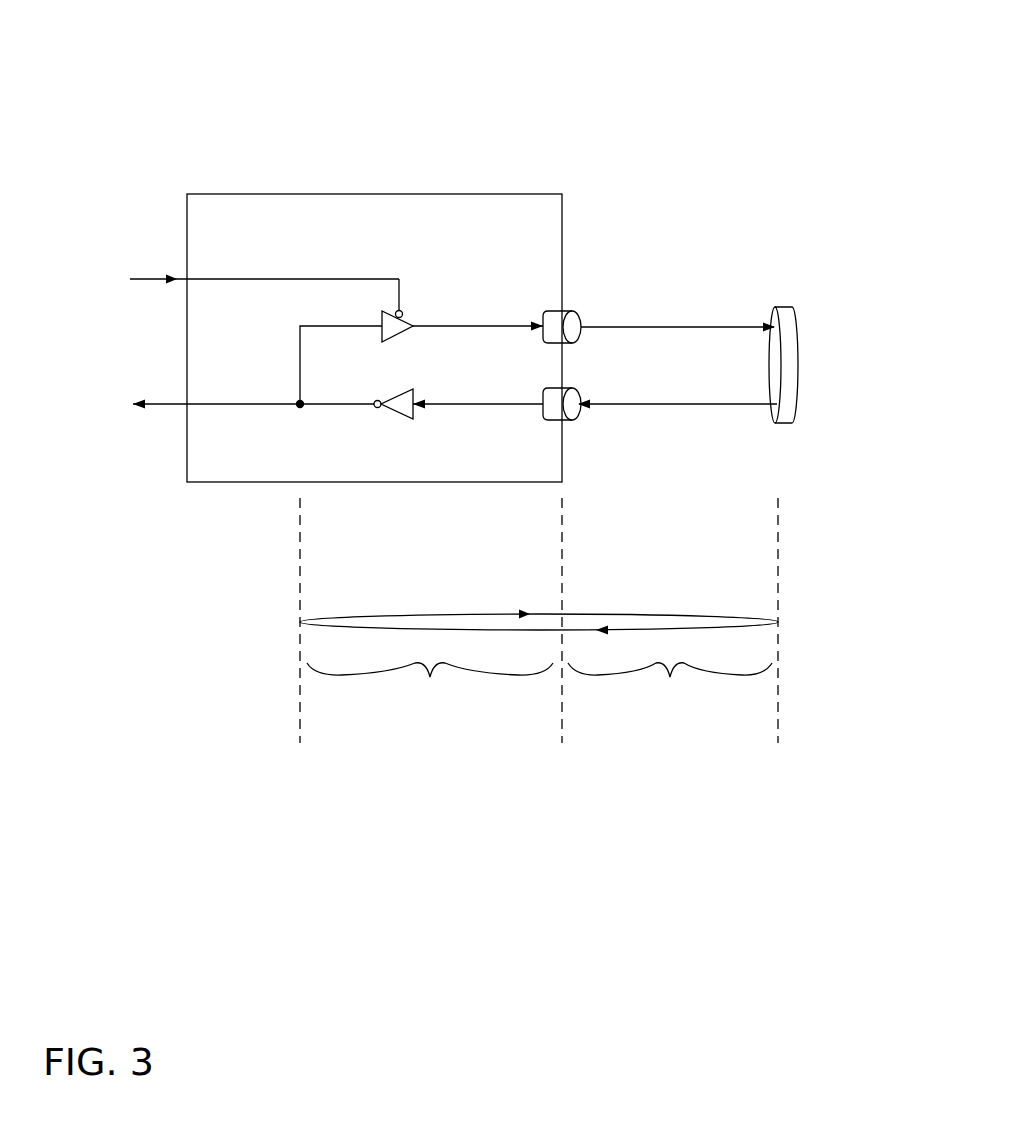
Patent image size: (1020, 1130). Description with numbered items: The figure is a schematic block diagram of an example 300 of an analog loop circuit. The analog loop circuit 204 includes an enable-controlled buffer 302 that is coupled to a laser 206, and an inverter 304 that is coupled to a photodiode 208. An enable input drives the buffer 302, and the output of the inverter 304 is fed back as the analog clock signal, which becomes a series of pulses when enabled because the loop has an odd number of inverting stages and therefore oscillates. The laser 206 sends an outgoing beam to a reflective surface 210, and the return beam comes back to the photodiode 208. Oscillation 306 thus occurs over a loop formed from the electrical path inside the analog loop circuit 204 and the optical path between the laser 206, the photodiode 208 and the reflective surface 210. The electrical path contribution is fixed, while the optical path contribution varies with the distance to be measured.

The example analog loop circuit 300 is at (724, 62).
The analog loop circuit 204 is at (469, 246).
The enable-controlled buffer 302 is at (398, 331).
The inverter 304 is at (397, 412).
The laser 206 is at (566, 311).
The photodiode 208 is at (566, 421).
The reflective surface 210 is at (785, 419).
The oscillation 306 is at (617, 613).